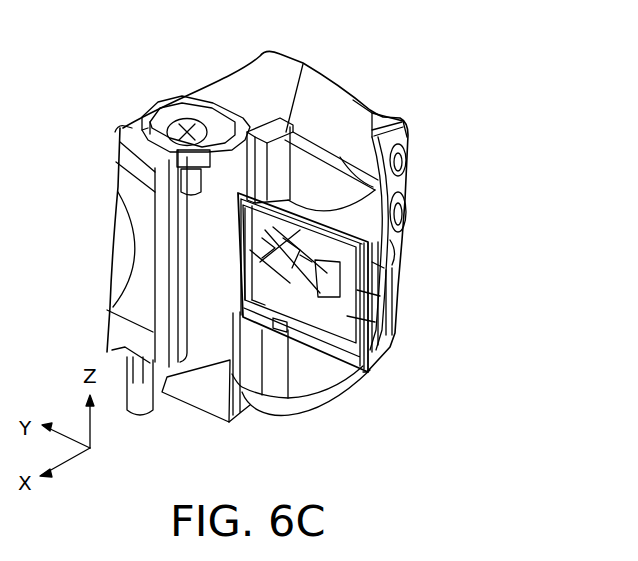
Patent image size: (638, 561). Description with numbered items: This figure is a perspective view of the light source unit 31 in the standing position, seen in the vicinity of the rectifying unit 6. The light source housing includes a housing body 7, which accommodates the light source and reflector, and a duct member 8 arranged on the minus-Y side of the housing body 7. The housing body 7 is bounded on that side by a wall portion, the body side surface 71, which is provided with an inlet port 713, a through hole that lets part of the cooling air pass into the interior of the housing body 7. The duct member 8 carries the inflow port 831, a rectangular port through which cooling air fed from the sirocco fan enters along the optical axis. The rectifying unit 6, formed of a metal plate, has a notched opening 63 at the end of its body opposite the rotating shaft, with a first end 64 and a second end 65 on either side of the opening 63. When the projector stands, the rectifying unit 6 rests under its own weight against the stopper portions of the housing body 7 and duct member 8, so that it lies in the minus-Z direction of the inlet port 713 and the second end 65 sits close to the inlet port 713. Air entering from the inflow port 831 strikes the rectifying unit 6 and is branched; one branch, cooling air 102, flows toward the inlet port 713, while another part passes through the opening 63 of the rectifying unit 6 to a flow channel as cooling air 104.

The duct member 8 is at (395, 92).
The rectifying unit 6 is at (311, 213).
The body side surface 71 is at (237, 218).
The inlet port 713 is at (265, 251).
The cooling air 102 is at (287, 258).
The second end 65 is at (252, 300).
The opening 63 is at (372, 267).
The inflow port 831 is at (357, 292).
The first end 64 is at (347, 318).
The housing body 7 is at (214, 396).
The cooling air 104 is at (270, 348).
The light source unit 31 is at (388, 437).